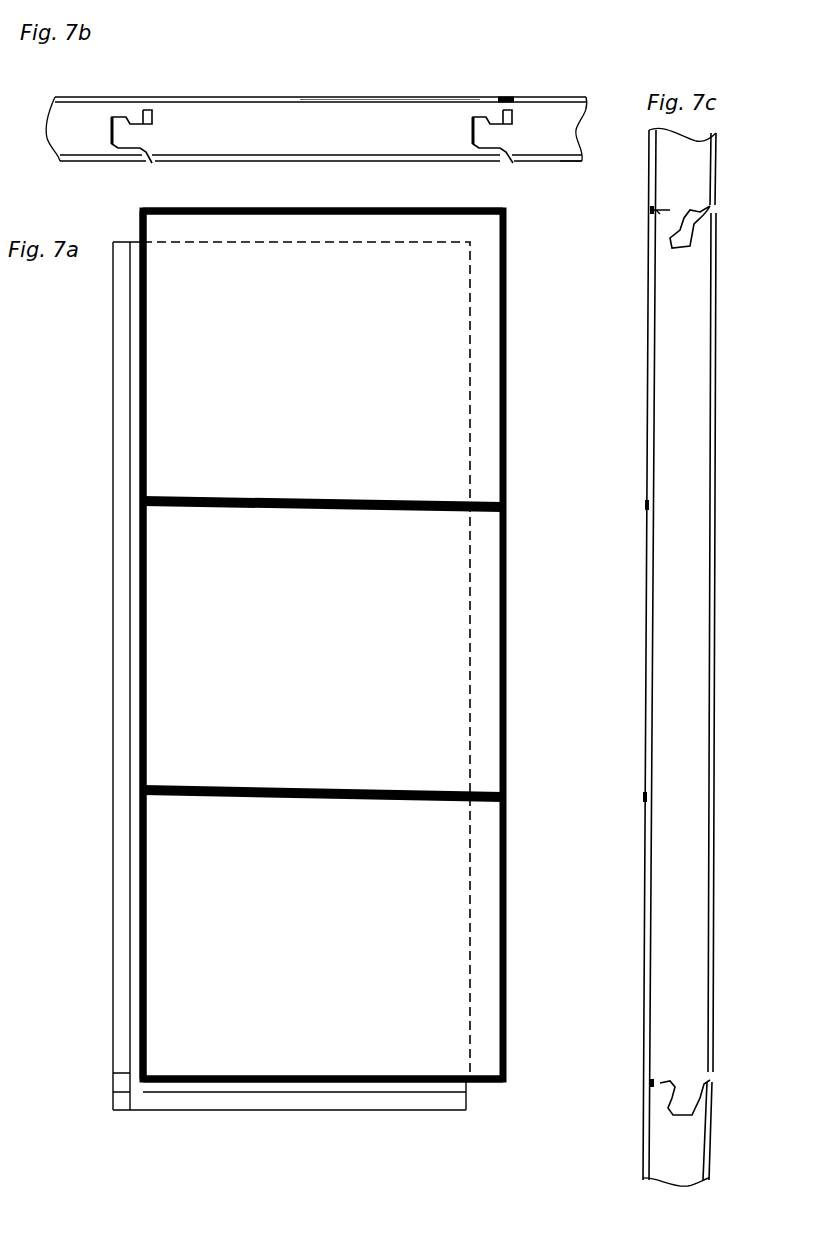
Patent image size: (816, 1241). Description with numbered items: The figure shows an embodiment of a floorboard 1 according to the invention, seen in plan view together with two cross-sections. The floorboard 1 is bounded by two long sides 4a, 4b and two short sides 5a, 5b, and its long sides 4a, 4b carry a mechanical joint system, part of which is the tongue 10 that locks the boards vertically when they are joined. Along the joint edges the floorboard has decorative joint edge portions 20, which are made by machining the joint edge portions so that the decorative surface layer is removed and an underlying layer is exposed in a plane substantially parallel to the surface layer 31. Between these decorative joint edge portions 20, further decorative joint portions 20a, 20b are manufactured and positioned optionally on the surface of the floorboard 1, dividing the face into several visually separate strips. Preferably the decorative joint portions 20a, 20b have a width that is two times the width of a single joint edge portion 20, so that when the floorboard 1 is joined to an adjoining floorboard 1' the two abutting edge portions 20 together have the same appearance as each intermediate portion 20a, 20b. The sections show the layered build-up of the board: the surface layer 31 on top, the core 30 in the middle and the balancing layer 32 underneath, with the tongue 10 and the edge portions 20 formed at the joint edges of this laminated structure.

In FIG. 7b, the floorboard 1 is at (294, 98).
In FIG. 7a, the floorboard 1 is at (323, 645).
In FIG. 7b, the adjoining floorboard 1' is at (546, 97).
In FIG. 7a, the long side 4a is at (510, 561).
In FIG. 7a, the long side 4b is at (100, 569).
In FIG. 7a, the short side 5a is at (445, 1116).
In FIG. 7a, the short side 5b is at (449, 205).
In FIG. 7a, the tongue 10 is at (118, 452).
In FIG. 7c, the tongue 10 is at (694, 202).
In FIG. 7b, the decorative joint edge portion 20 is at (147, 110).
In FIG. 7a, the decorative joint edge portion 20 is at (331, 213).
In FIG. 7c, the decorative joint edge portion 20 is at (652, 210).
In FIG. 7a, the decorative joint portion 20a is at (342, 500).
In FIG. 7c, the decorative joint portion 20a is at (646, 504).
In FIG. 7a, the decorative joint portion 20b is at (374, 790).
In FIG. 7c, the decorative joint portion 20b is at (646, 797).
In FIG. 7b, the core 30 is at (338, 128).
In FIG. 7c, the core 30 is at (692, 293).
In FIG. 7b, the surface layer 31 is at (442, 103).
In FIG. 7b, the balancing layer 32 is at (578, 162).
In FIG. 7c, the balancing layer 32 is at (712, 570).